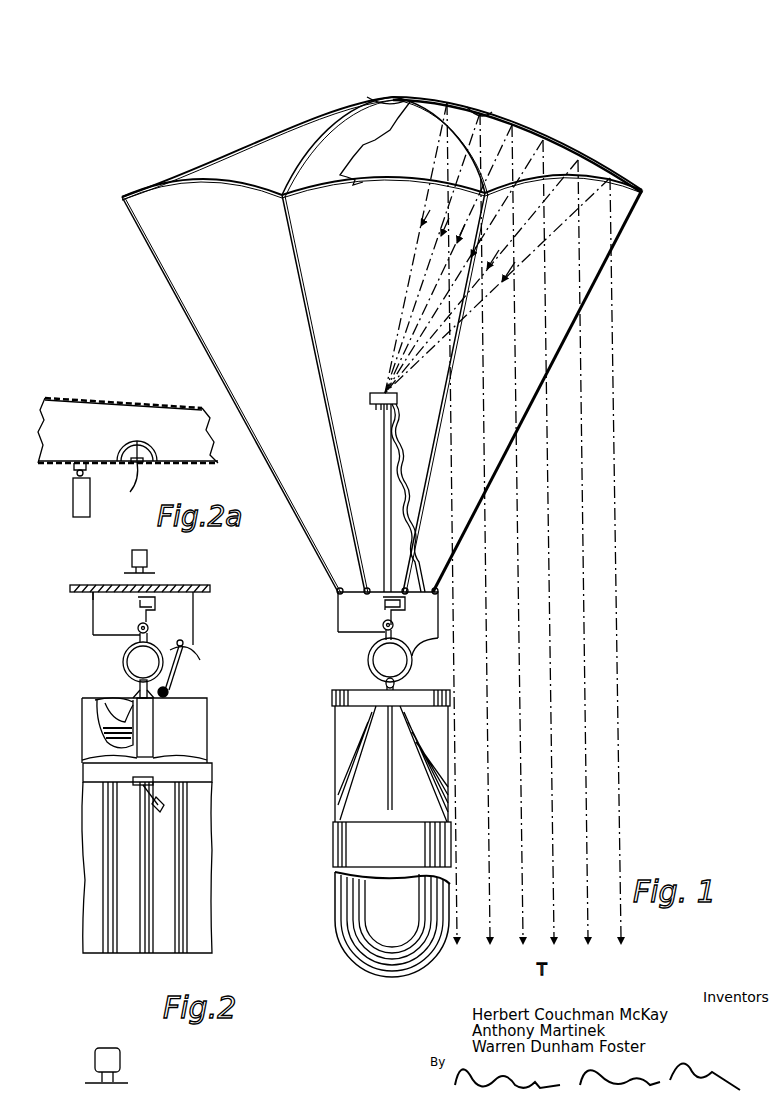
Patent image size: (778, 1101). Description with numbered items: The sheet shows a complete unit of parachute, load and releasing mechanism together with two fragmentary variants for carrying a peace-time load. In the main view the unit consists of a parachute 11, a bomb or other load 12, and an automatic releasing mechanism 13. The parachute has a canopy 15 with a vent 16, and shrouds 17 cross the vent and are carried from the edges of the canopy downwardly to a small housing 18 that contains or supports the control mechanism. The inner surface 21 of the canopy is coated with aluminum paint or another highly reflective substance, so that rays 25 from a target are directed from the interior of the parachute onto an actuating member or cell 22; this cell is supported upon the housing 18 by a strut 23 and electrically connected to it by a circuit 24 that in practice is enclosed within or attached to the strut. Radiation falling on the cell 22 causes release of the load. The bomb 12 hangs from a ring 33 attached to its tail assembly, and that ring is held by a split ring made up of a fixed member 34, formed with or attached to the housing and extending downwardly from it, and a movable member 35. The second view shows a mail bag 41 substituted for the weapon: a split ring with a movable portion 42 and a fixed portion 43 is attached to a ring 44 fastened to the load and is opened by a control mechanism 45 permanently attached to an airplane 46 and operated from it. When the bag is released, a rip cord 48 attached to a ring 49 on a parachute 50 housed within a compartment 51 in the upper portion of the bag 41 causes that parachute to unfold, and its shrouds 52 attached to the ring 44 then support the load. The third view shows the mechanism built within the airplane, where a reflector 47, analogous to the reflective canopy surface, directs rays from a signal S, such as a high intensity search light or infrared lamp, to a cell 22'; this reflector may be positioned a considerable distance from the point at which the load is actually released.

In FIG. 1, the parachute 11 is at (246, 100).
In FIG. 1, the bomb 12 is at (392, 841).
In FIG. 1, the automatic releasing mechanism 13 is at (323, 608).
In FIG. 1, the canopy 15 is at (382, 148).
In FIG. 1, the vent 16 is at (383, 95).
In FIG. 1, the shrouds 17 is at (420, 115).
In FIG. 1, the housing 18 is at (387, 613).
In FIG. 2, the housing 18 is at (143, 618).
In FIG. 1, the inner surface 21 is at (468, 108).
In FIG. 1, the actuating member 22 is at (364, 398).
In FIG. 2A, the cell 22' is at (120, 485).
In FIG. 1, the strut 23 is at (384, 460).
In FIG. 1, the circuit 24 is at (409, 506).
In FIG. 1, the rays 25 is at (617, 693).
In FIG. 1, the ring 33 is at (382, 686).
In FIG. 1, the fixed member 34 is at (413, 652).
In FIG. 1, the movable member 35 is at (369, 655).
In FIG. 2A, the mail bag 41 is at (88, 506).
In FIG. 2, the mail bag 41 is at (88, 808).
In FIG. 2, the movable portion 42 is at (124, 657).
In FIG. 2, the fixed portion 43 is at (161, 652).
In FIG. 2, the ring 44 is at (136, 690).
In FIG. 2A, the control mechanism 45 is at (78, 478).
In FIG. 2, the control mechanism 45 is at (93, 612).
In FIG. 2A, the airplane 46 is at (49, 467).
In FIG. 2, the airplane 46 is at (202, 593).
In FIG. 2A, the reflector 47 is at (128, 447).
In FIG. 2, the rip cord 48 is at (181, 652).
In FIG. 2, the ring 49 is at (170, 692).
In FIG. 2, the parachute 50 is at (105, 712).
In FIG. 2, the compartment 51 is at (105, 701).
In FIG. 2, the shrouds 52 is at (104, 740).
In FIG. 2, the signal S is at (148, 558).